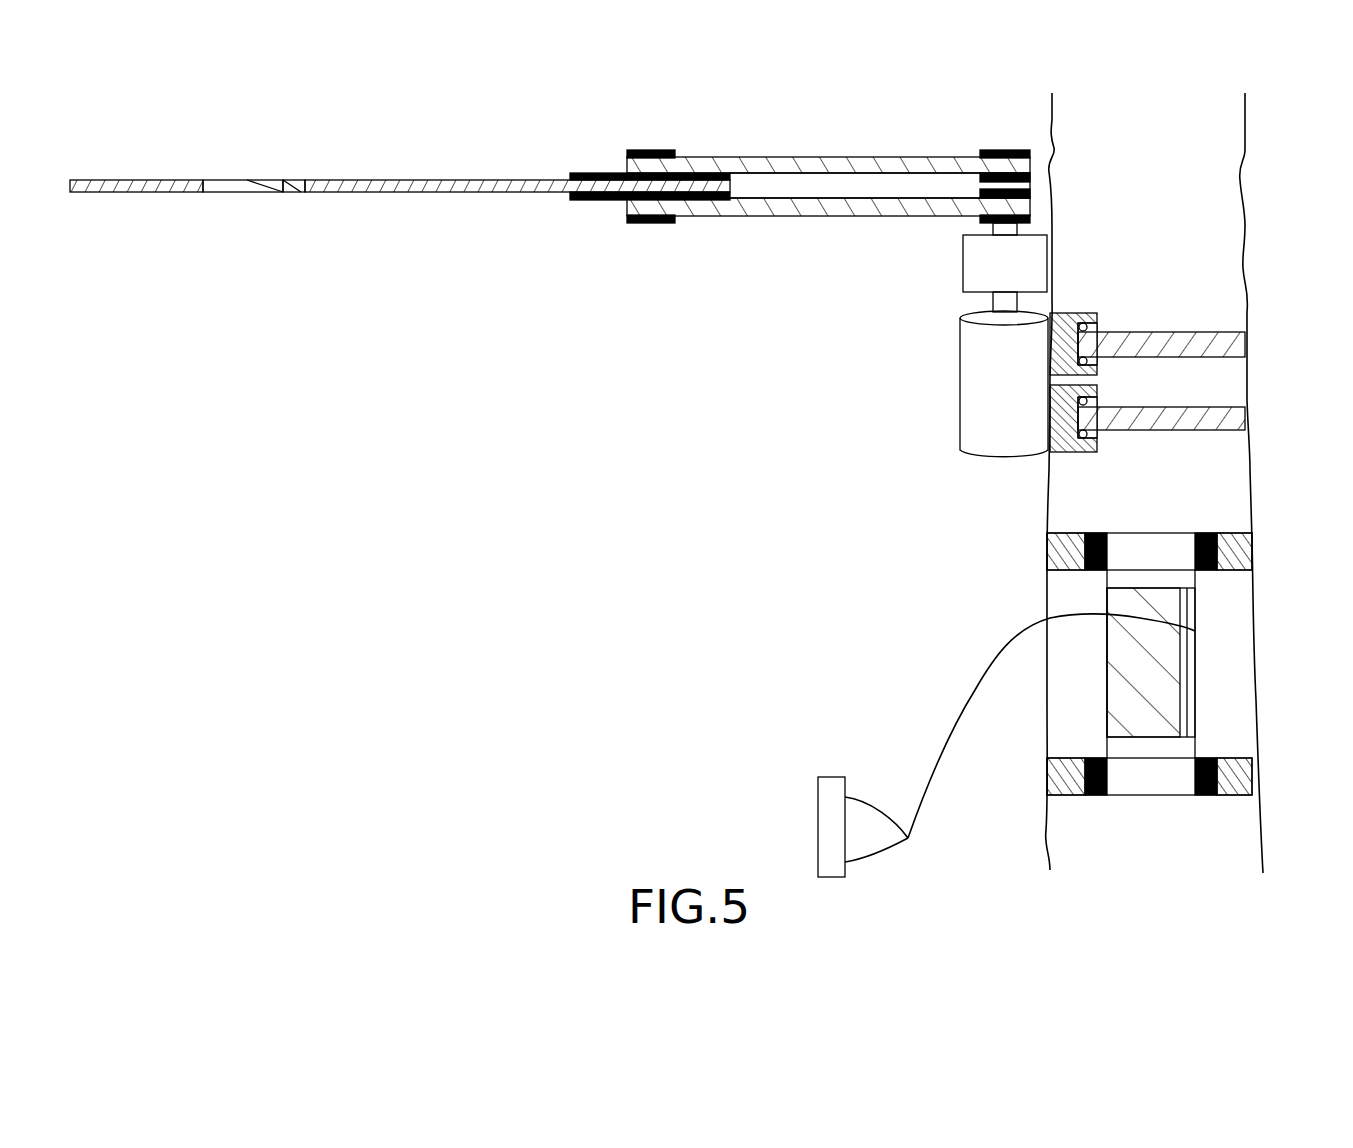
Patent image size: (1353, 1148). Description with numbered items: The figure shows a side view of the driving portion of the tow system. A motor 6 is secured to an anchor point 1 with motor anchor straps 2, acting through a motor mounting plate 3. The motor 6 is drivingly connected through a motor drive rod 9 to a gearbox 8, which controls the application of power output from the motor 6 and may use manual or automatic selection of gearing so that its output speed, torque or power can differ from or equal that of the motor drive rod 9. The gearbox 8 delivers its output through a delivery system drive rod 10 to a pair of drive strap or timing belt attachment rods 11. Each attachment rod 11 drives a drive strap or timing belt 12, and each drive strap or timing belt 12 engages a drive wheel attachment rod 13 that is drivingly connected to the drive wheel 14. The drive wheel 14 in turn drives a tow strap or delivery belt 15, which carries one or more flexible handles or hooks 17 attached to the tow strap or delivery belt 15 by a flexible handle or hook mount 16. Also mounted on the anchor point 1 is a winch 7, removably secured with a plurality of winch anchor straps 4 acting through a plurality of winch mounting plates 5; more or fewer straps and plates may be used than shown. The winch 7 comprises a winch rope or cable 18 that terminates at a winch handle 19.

The anchor point 1 is at (1145, 182).
The motor anchor straps 2 is at (1250, 347).
The motor mounting plate 3 is at (1097, 314).
The winch anchor straps 4 is at (1255, 555).
The winch mounting plates 5 is at (1205, 533).
The motor 6 is at (992, 404).
The winch 7 is at (1195, 672).
The gearbox 8 is at (997, 276).
The motor drive rod 9 is at (987, 305).
The delivery system drive rod 10 is at (1018, 227).
The drive strap or timing belt attachment rods 11 is at (988, 150).
The drive strap or timing belt 12 is at (798, 157).
The drive wheel attachment rod 13 is at (650, 150).
The drive wheel 14 is at (591, 172).
The tow strap or delivery belt 15 is at (420, 193).
The flexible handle or hook mount 16 is at (293, 193).
The flexible handles or hooks 17 is at (232, 193).
The winch rope or cable 18 is at (990, 656).
The winch handle 19 is at (826, 777).